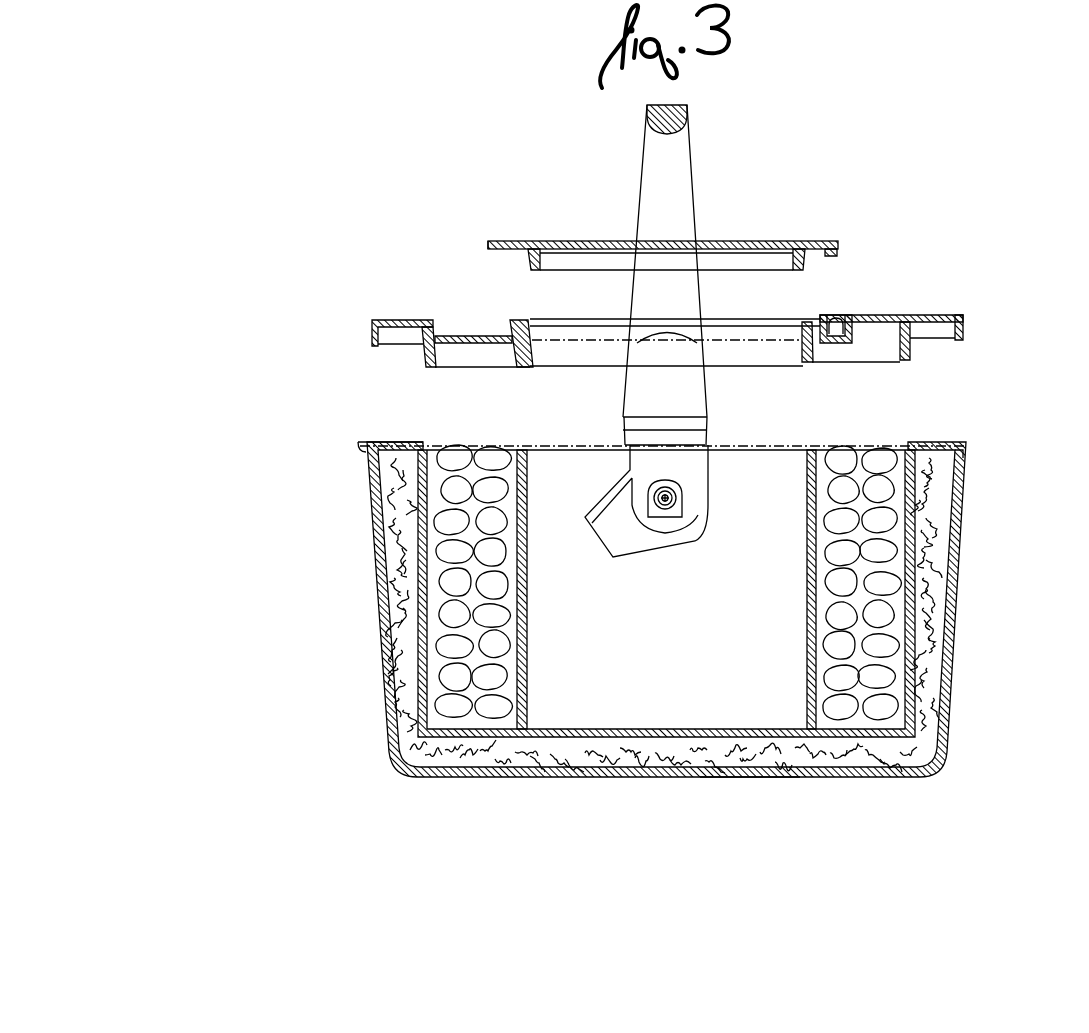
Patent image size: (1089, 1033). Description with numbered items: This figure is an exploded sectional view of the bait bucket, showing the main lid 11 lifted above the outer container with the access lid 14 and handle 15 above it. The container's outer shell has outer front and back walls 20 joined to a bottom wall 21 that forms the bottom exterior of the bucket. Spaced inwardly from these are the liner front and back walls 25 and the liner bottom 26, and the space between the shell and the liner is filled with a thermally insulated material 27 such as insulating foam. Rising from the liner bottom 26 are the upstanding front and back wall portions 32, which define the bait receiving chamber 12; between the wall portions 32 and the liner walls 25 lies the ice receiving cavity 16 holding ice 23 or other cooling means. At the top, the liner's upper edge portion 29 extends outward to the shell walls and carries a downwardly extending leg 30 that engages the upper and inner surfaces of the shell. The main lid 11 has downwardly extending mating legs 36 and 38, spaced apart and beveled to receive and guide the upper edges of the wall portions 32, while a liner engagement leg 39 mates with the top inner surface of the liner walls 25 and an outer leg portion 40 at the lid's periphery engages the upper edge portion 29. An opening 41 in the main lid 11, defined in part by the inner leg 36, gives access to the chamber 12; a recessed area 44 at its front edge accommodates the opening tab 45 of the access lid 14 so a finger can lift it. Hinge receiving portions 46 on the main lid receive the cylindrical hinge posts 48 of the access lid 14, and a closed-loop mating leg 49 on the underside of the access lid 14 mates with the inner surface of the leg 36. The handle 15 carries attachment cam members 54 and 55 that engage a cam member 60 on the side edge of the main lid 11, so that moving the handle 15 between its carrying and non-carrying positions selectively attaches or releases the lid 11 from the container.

The main lid 11 is at (910, 311).
The bait receiving chamber 12 is at (718, 657).
The access lid 14 is at (757, 240).
The handle 15 is at (678, 118).
The ice receiving cavity 16 is at (467, 447).
The outer front and back walls 20 is at (947, 638).
The bottom wall 21 is at (745, 772).
The ice 23 is at (470, 590).
The liner front and back walls 25 is at (910, 590).
The liner bottom 26 is at (767, 740).
The thermally insulated material 27 is at (930, 537).
The upper edge portion 29 is at (393, 442).
The downwardly extending leg 30 is at (960, 463).
The upstanding front and back wall portions 32 is at (523, 637).
The inner mating leg 36 is at (533, 368).
The outer mating leg 38 is at (535, 365).
The liner engagement leg 39 is at (913, 362).
The outer leg portion 40 is at (963, 340).
The opening 41 is at (740, 338).
The recessed area 44 is at (463, 327).
The opening tab 45 is at (489, 240).
The hinge receiving portions 46 is at (838, 320).
The hinge posts 48 is at (830, 255).
The mating leg 49 is at (533, 263).
The attachment cam member 54 is at (615, 555).
The attachment cam member 55 is at (693, 423).
The cam member 60 is at (680, 338).